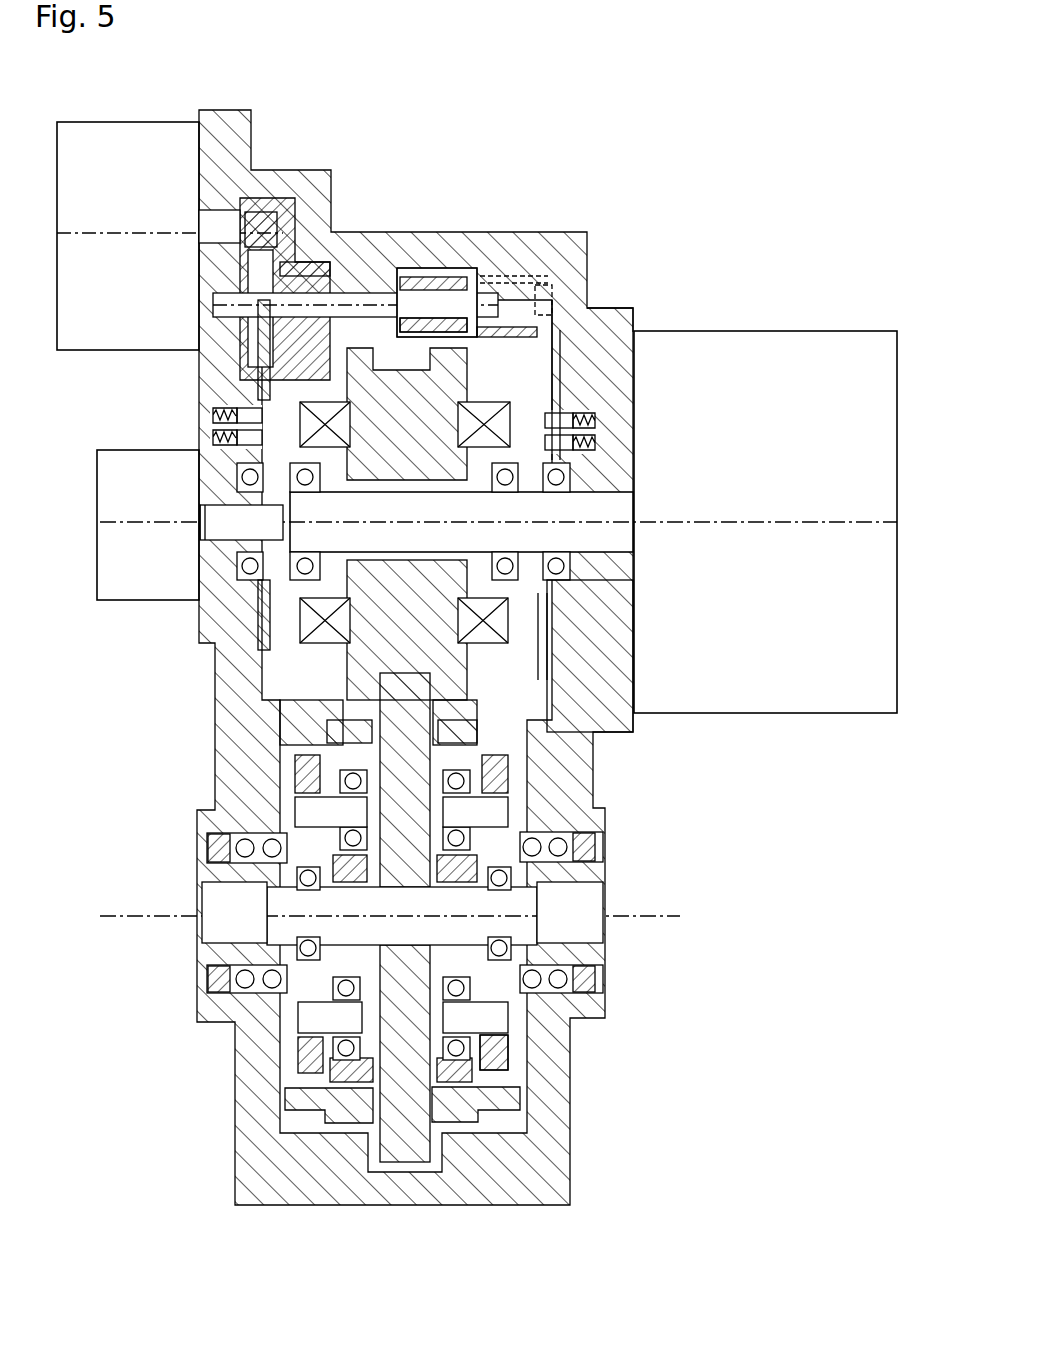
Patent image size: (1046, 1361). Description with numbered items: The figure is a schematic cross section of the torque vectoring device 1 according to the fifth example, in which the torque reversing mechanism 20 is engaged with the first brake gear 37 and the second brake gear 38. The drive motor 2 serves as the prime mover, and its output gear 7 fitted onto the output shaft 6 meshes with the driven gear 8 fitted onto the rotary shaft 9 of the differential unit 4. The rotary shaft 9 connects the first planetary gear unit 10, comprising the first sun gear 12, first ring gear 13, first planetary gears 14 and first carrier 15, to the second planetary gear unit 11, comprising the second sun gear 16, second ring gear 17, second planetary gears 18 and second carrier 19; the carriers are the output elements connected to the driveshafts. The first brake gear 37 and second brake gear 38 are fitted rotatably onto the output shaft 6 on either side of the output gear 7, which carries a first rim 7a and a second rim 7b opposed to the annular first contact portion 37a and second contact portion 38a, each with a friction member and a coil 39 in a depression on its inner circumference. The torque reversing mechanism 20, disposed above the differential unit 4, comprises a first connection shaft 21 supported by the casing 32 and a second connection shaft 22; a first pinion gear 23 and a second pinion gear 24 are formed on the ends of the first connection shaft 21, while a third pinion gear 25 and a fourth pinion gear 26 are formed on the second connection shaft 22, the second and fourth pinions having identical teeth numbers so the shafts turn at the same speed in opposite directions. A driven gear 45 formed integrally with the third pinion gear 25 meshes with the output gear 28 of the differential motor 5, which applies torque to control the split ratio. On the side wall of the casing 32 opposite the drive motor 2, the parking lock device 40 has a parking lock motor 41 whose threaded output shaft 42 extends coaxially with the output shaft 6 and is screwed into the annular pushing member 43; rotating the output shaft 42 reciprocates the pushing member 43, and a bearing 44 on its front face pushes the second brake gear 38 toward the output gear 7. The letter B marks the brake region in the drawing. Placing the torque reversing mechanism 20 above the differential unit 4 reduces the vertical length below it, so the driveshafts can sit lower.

The torque vectoring device 1 is at (658, 143).
The drive motor 2 is at (783, 345).
The differential unit 4 is at (665, 868).
The differential motor 5 is at (128, 143).
The output shaft 6 is at (632, 500).
The output gear 7 is at (460, 620).
The first rim 7a is at (450, 680).
The second rim 7b is at (320, 620).
The driven gear 8 is at (383, 742).
The rotary shaft 9 is at (285, 905).
The first planetary gear unit 10 is at (465, 1123).
The second planetary gear unit 11 is at (345, 1123).
The first sun gear 12 is at (525, 928).
The first ring gear 13 is at (470, 1102).
The first planetary gears 14 is at (470, 1078).
The first carrier 15 is at (497, 1046).
The second sun gear 16 is at (330, 927).
The second ring gear 17 is at (340, 1103).
The second planetary gears 18 is at (340, 1075).
The second carrier 19 is at (305, 1058).
The torque reversing mechanism 20 is at (455, 258).
The first connection shaft 21 is at (552, 300).
The second connection shaft 22 is at (360, 293).
The first pinion gear 23 is at (495, 275).
The second pinion gear 24 is at (417, 283).
The third pinion gear 25 is at (318, 282).
The fourth pinion gear 26 is at (433, 325).
The output gear 28 is at (262, 222).
The casing 32 is at (608, 318).
The first brake gear 37 is at (540, 700).
The first contact portion 37a is at (560, 700).
The second brake gear 38 is at (270, 625).
The second contact portion 38a is at (300, 712).
The coil 39 is at (575, 330).
The parking lock device 40 is at (210, 555).
The parking lock motor 41 is at (110, 485).
The output shaft 42 is at (205, 525).
The pushing member 43 is at (235, 470).
The bearing 44 is at (215, 413).
The driven gear 45 is at (300, 262).
The brake B is at (565, 390).